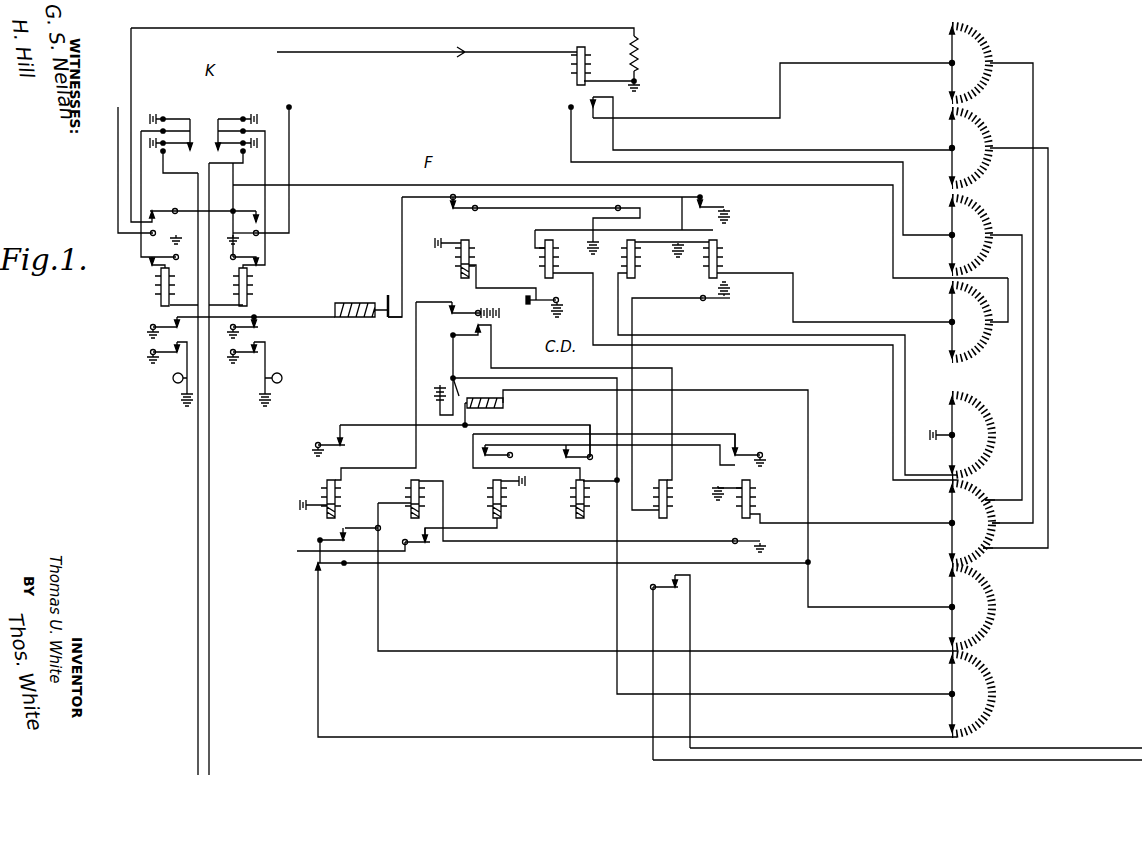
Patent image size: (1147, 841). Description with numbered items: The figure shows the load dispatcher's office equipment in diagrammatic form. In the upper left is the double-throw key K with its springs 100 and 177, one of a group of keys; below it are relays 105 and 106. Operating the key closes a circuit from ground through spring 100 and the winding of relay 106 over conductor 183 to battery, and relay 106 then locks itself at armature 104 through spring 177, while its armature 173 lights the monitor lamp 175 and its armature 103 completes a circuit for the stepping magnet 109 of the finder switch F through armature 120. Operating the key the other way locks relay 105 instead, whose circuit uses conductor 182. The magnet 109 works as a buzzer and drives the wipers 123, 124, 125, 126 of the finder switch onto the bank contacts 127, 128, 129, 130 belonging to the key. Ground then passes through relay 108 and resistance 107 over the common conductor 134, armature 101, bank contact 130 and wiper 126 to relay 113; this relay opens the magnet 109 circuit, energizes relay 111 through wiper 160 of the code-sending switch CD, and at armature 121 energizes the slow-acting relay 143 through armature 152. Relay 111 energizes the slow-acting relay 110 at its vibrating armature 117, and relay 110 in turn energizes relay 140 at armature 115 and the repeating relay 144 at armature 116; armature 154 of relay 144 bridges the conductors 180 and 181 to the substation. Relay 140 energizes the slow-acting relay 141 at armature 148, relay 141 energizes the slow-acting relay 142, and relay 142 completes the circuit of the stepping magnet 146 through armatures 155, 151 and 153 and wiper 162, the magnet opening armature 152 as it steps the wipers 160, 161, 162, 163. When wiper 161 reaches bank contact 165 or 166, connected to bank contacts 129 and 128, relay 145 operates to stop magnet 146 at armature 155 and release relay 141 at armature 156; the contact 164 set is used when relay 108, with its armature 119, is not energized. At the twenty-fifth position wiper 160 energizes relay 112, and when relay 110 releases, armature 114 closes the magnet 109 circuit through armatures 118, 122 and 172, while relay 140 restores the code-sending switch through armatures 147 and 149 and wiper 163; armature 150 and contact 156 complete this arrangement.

The spring 100 is at (232, 122).
The armature 101 is at (233, 211).
The armature 103 is at (241, 235).
The armature 104 is at (256, 257).
The relay 105 is at (156, 292).
The relay 106 is at (252, 291).
The resistance 107 is at (642, 53).
The common relay 108 is at (577, 66).
The stepping magnet 109 is at (350, 318).
The slow-acting relay 110 is at (472, 261).
The relay 111 is at (556, 261).
The relay 112 is at (638, 261).
The relay 113 is at (720, 261).
The armature 114 is at (458, 208).
The armature 115 is at (456, 313).
The armature 116 is at (456, 336).
The armature 117 is at (540, 301).
The armature 118 is at (635, 206).
The armature 119 is at (585, 100).
The armature 120 is at (715, 207).
The armature 121 is at (715, 299).
The armature 122 is at (392, 299).
The wiper 123 is at (952, 60).
The wiper 124 is at (951, 146).
The wiper 125 is at (951, 232).
The wiper 126 is at (951, 320).
The bank contact 127 is at (998, 62).
The bank contact 128 is at (992, 148).
The bank contact 129 is at (988, 236).
The bank contact 130 is at (996, 325).
The common conductor 134 is at (375, 55).
The slow-acting relay 140 is at (327, 495).
The slow-acting relay 141 is at (411, 493).
The slow-acting relay 142 is at (493, 497).
The slow-acting relay 143 is at (576, 495).
The repeating relay 144 is at (667, 495).
The relay 145 is at (750, 495).
The stepping magnet 146 is at (506, 404).
The armature 147 is at (338, 440).
The armature 148 is at (335, 536).
The armature 149 is at (325, 566).
The contact 150 is at (426, 542).
The armature 151 is at (510, 456).
The armature 152 is at (456, 392).
The armature 153 is at (577, 458).
The armature 154 is at (664, 588).
The armature 155 is at (745, 455).
The armature 156 is at (742, 543).
The wiper 160 is at (952, 437).
The wiper 161 is at (950, 518).
The wiper 162 is at (950, 595).
The wiper 163 is at (950, 690).
The bank contact 164 is at (995, 522).
The bank contact 165 is at (987, 498).
The bank contact 166 is at (990, 548).
The armature 172 is at (258, 328).
The armature 173 is at (250, 353).
The monitor lamp 175 is at (282, 381).
The spring 177 is at (172, 145).
The conductor 180 is at (1040, 748).
The conductor 181 is at (1103, 760).
The conductor 182 is at (204, 620).
The conductor 183 is at (210, 655).